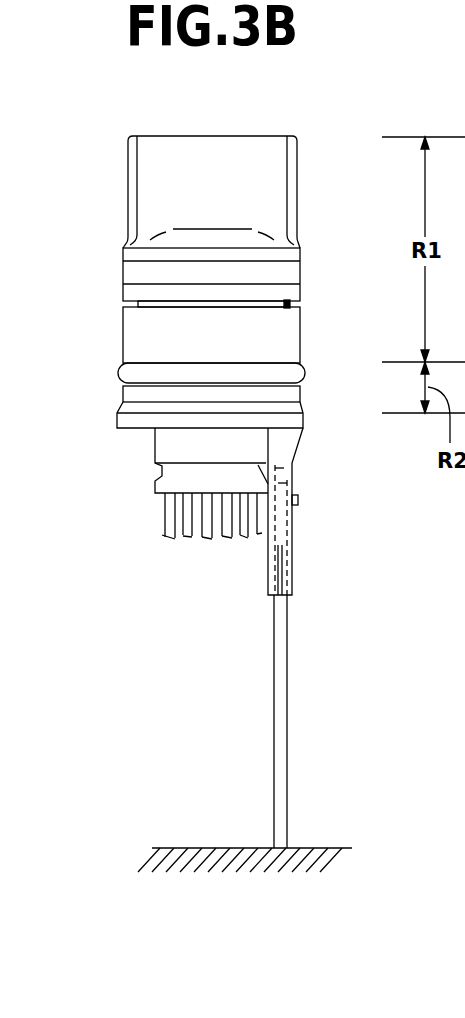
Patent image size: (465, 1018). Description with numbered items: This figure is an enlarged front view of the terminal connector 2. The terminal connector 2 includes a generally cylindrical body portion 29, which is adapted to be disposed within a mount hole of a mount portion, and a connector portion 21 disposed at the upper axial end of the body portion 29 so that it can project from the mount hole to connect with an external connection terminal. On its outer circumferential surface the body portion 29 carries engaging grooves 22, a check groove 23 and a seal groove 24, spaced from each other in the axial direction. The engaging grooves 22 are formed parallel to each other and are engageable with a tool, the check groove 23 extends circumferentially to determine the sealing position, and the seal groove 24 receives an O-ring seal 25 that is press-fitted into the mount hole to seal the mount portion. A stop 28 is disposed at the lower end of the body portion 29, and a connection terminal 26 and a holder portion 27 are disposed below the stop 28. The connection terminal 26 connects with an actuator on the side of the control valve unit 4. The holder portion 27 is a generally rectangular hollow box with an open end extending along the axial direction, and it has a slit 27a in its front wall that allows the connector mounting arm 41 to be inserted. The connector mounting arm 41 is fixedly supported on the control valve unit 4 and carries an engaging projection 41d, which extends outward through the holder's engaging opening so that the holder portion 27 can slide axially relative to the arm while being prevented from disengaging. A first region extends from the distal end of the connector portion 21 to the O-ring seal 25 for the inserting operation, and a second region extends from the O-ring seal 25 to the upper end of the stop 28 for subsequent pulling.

The terminal connector 2 is at (284, 123).
The connector portion 21 is at (290, 175).
The engaging grooves 22 is at (133, 272).
The check groove 23 is at (293, 305).
The seal groove 24 is at (284, 377).
The O-ring seal 25 is at (120, 377).
The connection terminal 26 is at (158, 478).
The holder portion 27 is at (306, 452).
The slit 27a is at (288, 577).
The stop 28 is at (293, 420).
The body portion 29 is at (108, 333).
The connector mounting arm 41 is at (296, 718).
The engaging projection 41d is at (298, 500).
The control valve unit 4 is at (307, 878).